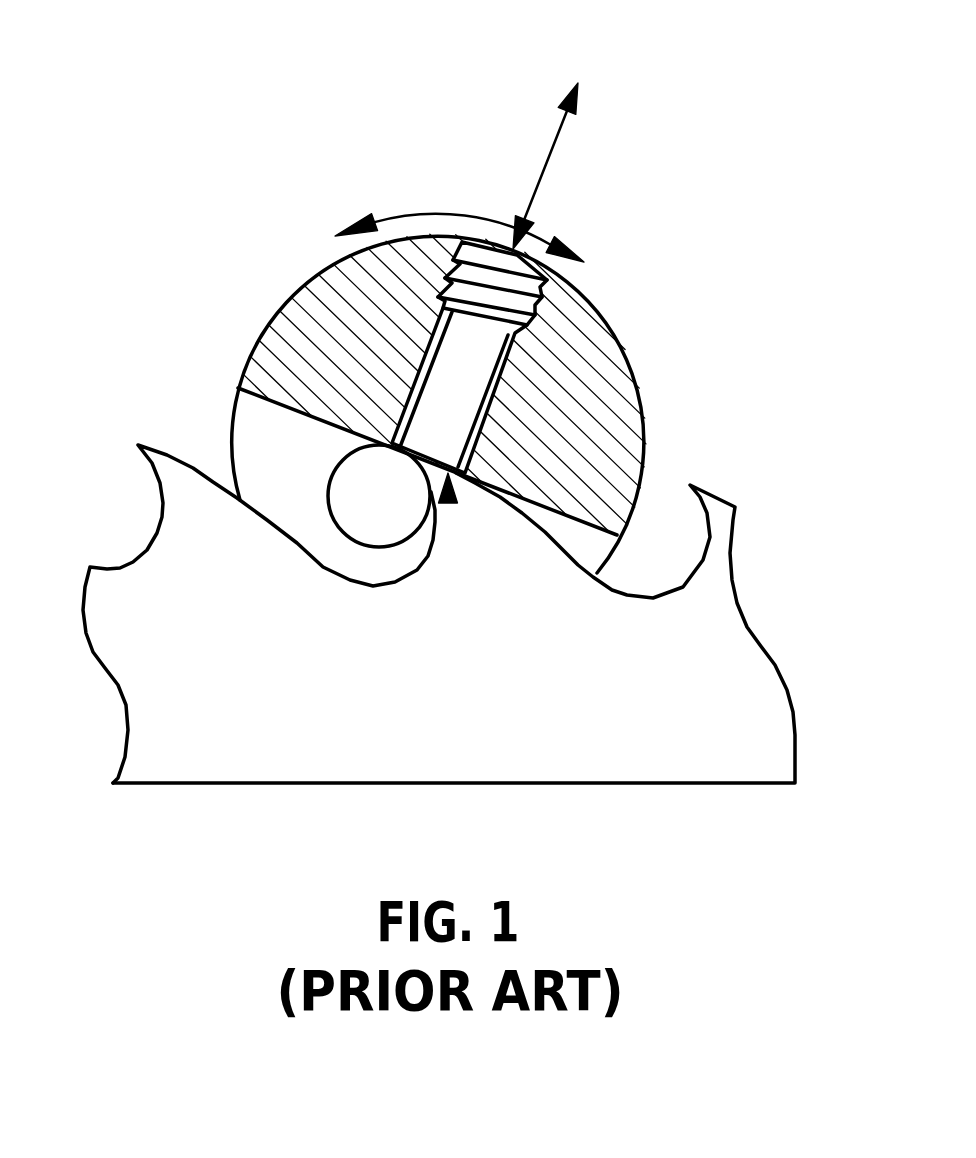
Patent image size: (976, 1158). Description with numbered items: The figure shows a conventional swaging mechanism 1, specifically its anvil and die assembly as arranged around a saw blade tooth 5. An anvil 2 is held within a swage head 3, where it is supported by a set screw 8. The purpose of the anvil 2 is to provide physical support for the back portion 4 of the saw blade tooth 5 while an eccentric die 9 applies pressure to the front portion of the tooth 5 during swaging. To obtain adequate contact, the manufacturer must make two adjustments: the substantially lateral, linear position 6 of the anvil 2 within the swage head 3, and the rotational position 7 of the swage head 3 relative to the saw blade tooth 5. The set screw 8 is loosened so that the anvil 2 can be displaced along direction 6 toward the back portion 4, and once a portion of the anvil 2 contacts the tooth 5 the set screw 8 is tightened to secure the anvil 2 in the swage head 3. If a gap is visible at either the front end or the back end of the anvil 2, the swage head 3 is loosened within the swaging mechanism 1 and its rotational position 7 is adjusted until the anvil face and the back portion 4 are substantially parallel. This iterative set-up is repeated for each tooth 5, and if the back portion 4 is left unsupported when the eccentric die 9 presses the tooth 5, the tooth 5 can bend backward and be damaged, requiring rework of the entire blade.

The swaging mechanism 1 is at (439, 393).
The anvil 2 is at (482, 363).
The swage head 3 is at (277, 306).
The back portion 4 is at (449, 503).
The saw blade tooth 5 is at (515, 536).
The lateral linear position 6 is at (558, 138).
The rotational position 7 is at (376, 222).
The set screw 8 is at (533, 242).
The eccentric die 9 is at (343, 487).